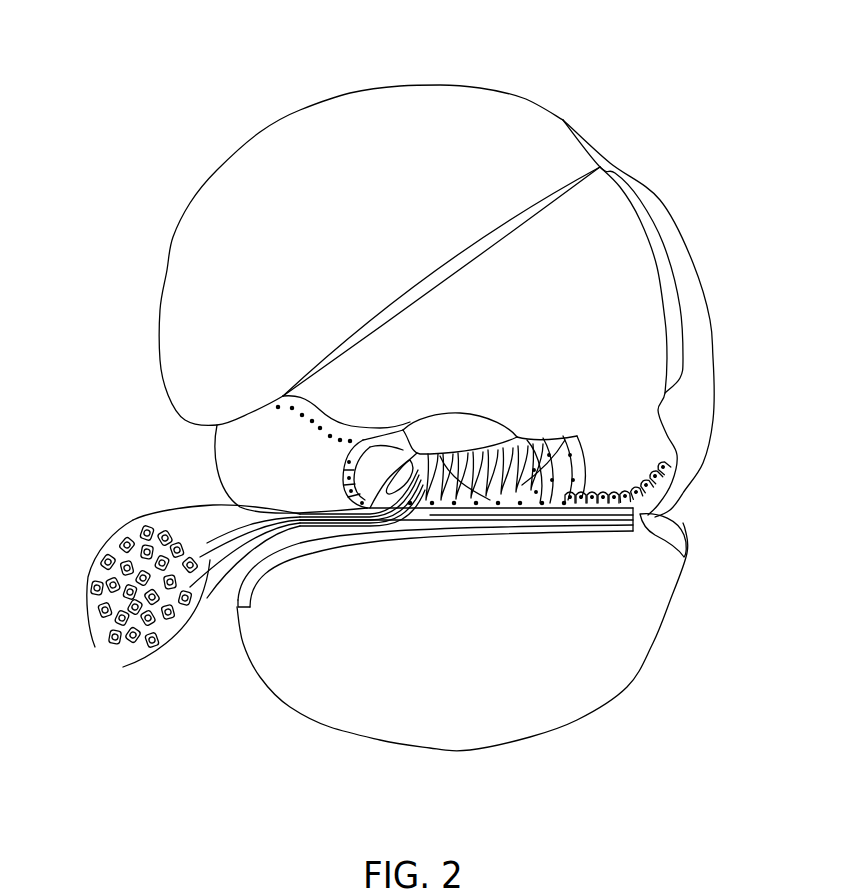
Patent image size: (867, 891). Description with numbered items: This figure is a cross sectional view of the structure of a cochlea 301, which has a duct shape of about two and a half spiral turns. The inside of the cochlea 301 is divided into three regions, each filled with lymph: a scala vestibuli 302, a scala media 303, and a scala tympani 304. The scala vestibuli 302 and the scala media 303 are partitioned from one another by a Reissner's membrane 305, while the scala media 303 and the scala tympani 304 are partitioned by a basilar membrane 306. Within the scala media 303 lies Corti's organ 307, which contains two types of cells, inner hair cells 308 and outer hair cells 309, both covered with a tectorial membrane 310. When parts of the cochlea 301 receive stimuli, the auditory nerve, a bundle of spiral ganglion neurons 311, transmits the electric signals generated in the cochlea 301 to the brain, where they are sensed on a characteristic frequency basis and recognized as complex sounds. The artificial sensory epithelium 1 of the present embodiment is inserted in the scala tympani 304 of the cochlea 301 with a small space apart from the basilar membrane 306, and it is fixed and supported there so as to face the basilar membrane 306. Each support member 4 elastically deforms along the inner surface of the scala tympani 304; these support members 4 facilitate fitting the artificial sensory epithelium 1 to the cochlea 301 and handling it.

The artificial sensory epithelium 1 is at (333, 566).
The support member 4 is at (380, 533).
The cochlea 301 is at (138, 128).
The scala vestibuli 302 is at (268, 153).
The scala media 303 is at (613, 218).
The scala tympani 304 is at (637, 647).
The Reissner's membrane 305 is at (463, 255).
The basilar membrane 306 is at (640, 523).
The Corti's organ 307 is at (558, 446).
The inner hair cells 308 is at (400, 455).
The outer hair cells 309 is at (496, 476).
The tectorial membrane 310 is at (457, 417).
The spiral ganglion neurons 311 is at (222, 518).